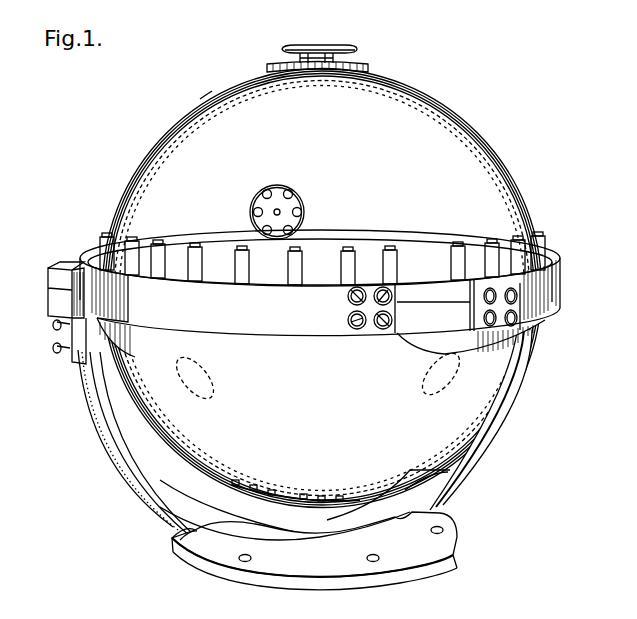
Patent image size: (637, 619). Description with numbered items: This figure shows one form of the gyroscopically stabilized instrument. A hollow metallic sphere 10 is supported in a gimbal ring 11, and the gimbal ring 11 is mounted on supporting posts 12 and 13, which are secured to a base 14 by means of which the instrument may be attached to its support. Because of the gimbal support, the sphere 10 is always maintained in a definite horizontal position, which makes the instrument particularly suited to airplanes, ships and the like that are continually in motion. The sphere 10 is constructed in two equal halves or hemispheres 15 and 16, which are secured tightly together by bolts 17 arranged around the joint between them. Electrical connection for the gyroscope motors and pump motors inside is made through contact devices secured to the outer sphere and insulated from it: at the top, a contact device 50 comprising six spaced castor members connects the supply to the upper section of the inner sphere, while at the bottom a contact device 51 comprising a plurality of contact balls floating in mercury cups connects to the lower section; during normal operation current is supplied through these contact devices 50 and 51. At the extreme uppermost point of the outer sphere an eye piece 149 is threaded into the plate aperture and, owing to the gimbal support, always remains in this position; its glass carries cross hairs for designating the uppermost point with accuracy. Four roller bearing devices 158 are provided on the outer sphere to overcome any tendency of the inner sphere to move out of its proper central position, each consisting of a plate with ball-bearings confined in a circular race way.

The hollow metallic sphere 10 is at (451, 118).
The gimbal ring 11 is at (557, 290).
The supporting post 12 is at (106, 449).
The supporting post 13 is at (490, 438).
The base 14 is at (450, 552).
The hemisphere 15 is at (205, 101).
The hemisphere 16 is at (404, 474).
The bolts 17 is at (196, 243).
The contact device 50 is at (366, 67).
The contact device 51 is at (300, 498).
The eye piece 149 is at (317, 45).
The roller bearing devices 158 is at (283, 186).